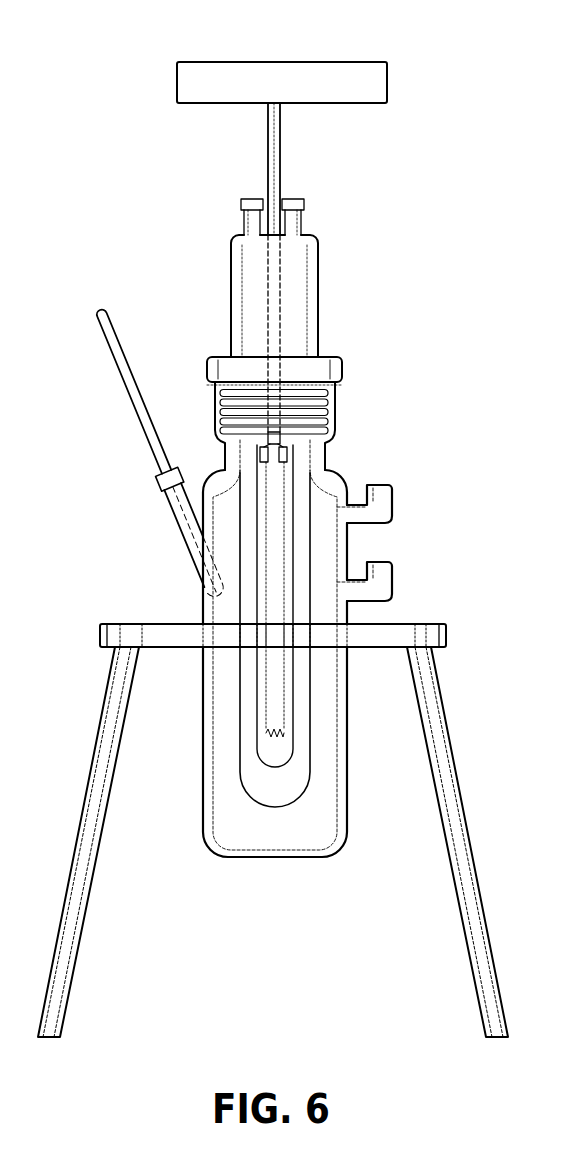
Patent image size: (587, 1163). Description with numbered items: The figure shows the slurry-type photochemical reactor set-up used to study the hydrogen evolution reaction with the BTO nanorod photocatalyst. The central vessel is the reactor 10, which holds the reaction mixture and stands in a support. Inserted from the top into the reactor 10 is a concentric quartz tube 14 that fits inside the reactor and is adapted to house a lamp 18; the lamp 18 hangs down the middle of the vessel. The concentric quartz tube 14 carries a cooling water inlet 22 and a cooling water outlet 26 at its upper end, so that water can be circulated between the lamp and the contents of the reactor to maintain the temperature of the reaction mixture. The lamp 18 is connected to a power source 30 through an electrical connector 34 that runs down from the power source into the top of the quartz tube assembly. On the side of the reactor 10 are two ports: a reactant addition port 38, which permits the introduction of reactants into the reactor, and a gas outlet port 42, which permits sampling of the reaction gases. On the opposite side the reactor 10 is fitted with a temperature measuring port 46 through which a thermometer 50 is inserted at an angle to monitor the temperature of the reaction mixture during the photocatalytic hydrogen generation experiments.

The reactor 10 is at (340, 467).
The concentric quartz tube 14 is at (320, 288).
The lamp 18 is at (284, 733).
The cooling water inlet 22 is at (252, 198).
The cooling water outlet 26 is at (295, 198).
The power source 30 is at (276, 62).
The electrical connector 34 is at (282, 131).
The reactant addition port 38 is at (383, 562).
The gas outlet port 42 is at (383, 485).
The temperature measuring port 46 is at (180, 528).
The thermometer 50 is at (124, 377).